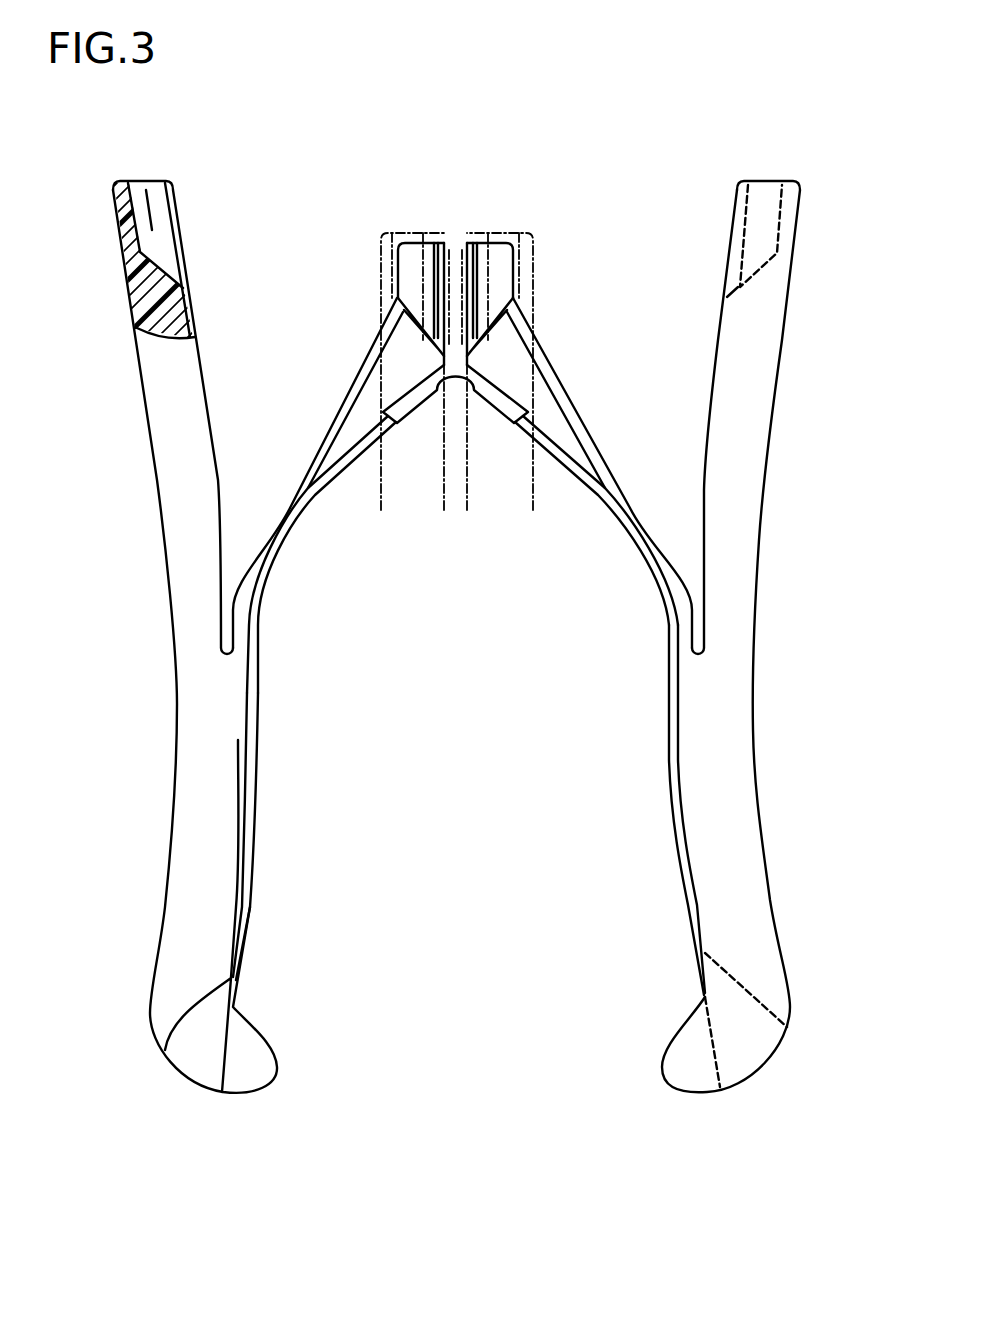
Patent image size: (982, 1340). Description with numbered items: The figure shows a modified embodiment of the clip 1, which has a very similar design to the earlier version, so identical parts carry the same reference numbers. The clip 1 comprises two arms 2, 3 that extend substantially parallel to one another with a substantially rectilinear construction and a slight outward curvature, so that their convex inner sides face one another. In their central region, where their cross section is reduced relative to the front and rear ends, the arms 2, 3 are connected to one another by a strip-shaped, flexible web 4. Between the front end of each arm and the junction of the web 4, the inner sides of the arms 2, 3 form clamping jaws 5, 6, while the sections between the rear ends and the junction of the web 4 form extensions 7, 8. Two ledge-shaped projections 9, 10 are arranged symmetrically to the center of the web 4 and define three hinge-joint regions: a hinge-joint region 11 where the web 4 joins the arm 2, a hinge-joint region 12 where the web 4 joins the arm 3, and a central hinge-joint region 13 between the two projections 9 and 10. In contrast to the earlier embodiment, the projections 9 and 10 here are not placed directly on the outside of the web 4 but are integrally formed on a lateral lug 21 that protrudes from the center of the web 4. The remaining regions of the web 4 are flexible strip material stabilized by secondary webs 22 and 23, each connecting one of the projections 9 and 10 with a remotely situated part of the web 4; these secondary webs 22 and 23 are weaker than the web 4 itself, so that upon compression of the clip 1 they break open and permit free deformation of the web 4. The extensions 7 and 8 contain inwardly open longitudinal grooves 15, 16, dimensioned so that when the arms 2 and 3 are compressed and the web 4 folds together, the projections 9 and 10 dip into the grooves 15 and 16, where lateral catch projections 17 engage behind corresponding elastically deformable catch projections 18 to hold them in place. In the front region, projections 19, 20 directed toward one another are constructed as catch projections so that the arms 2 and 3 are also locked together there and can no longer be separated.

The clip 1 is at (808, 525).
The arm 2 is at (165, 803).
The arm 3 is at (784, 859).
The web 4 is at (580, 498).
The clamping jaw 5 is at (245, 823).
The clamping jaw 6 is at (687, 836).
The extension 7 is at (128, 242).
The extension 8 is at (790, 234).
The ledge-shaped projection 9 is at (410, 262).
The ledge-shaped projection 10 is at (492, 263).
The hinge-joint region 11 is at (257, 580).
The hinge-joint region 12 is at (662, 565).
The central hinge-joint region 13 is at (398, 412).
The longitudinal groove 15 is at (153, 216).
The longitudinal groove 16 is at (733, 218).
The lateral catch projection 17 is at (470, 295).
The catch projection 18 is at (160, 246).
The projection 19 is at (267, 1083).
The projection 20 is at (673, 1082).
The lateral lug 21 is at (455, 262).
The secondary web 22 is at (327, 433).
The secondary web 23 is at (572, 405).